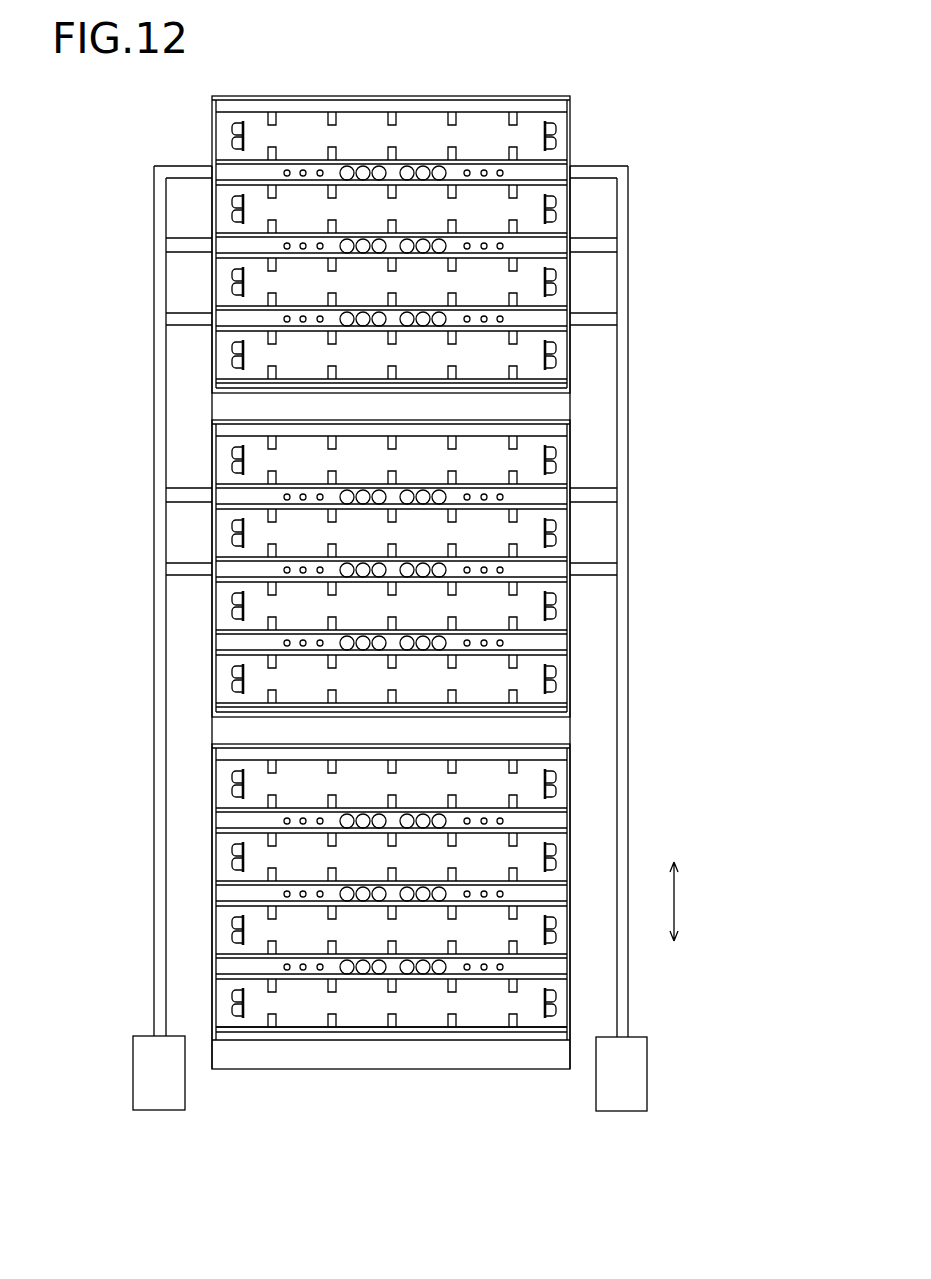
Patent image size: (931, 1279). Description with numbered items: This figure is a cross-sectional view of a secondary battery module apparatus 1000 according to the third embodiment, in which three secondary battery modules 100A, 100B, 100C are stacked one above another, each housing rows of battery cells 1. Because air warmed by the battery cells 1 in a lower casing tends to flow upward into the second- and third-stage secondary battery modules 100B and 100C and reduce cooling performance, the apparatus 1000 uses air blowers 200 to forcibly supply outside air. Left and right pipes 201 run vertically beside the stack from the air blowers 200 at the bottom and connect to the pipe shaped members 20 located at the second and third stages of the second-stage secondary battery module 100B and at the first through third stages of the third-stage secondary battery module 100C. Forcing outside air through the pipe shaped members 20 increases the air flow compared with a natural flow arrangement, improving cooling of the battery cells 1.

The battery cell 1 is at (258, 358).
The pipe shaped member 20 is at (545, 318).
The secondary battery module 100A is at (579, 768).
The secondary battery module 100B is at (579, 440).
The secondary battery module 100C is at (580, 99).
The air blower 200 is at (168, 1107).
The pipe 201 is at (152, 617).
The secondary battery module apparatus 1000 is at (419, 48).